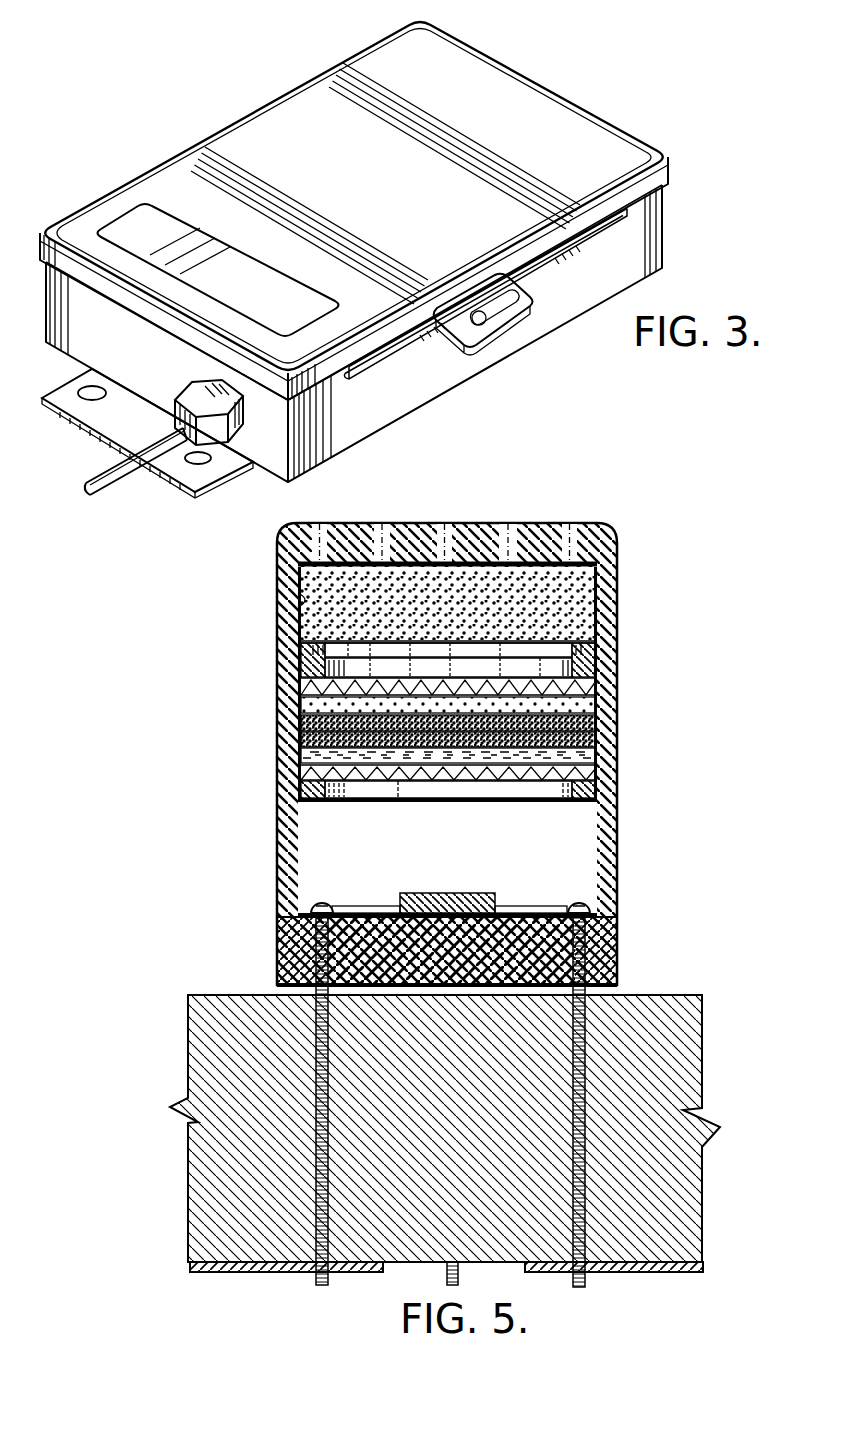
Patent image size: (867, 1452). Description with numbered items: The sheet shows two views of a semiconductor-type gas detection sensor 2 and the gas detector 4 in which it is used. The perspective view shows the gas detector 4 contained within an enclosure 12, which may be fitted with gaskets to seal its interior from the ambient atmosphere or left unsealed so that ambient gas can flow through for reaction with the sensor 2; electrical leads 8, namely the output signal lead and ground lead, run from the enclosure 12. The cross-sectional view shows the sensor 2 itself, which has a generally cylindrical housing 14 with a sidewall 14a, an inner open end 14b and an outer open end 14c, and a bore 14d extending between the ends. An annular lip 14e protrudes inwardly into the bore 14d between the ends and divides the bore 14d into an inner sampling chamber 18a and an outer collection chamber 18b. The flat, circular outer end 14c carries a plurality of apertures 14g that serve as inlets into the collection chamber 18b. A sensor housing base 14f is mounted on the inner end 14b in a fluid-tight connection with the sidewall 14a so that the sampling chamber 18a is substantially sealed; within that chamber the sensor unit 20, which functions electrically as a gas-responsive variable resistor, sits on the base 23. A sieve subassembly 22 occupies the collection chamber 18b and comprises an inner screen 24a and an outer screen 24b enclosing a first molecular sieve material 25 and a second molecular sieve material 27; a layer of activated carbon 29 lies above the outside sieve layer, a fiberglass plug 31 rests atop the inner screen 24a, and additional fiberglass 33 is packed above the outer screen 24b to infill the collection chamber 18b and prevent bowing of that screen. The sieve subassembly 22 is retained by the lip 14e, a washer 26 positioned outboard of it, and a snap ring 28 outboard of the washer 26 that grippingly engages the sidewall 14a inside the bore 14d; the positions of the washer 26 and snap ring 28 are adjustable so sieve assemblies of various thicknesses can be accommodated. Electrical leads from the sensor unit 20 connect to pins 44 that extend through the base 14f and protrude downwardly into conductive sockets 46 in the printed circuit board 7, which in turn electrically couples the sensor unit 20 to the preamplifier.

In FIG. 5, the gas detection sensor 2 is at (469, 872).
In FIG. 3, the gas detector 4 is at (354, 267).
In FIG. 5, the printed circuit board 7 is at (675, 1045).
In FIG. 3, the electrical leads 8 is at (122, 478).
In FIG. 3, the enclosure 12 is at (290, 90).
In FIG. 5, the housing 14 is at (623, 612).
In FIG. 5, the sidewall 14a is at (282, 647).
In FIG. 5, the inner open end 14b is at (290, 958).
In FIG. 5, the outer open end 14c is at (488, 522).
In FIG. 5, the bore 14d is at (287, 593).
In FIG. 5, the annular lip 14e is at (308, 802).
In FIG. 5, the sensor housing base 14f is at (474, 958).
In FIG. 5, the apertures 14g is at (573, 522).
In FIG. 5, the inner sampling chamber 18a is at (447, 851).
In FIG. 5, the outer collection chamber 18b is at (434, 614).
In FIG. 5, the sensor unit 20 is at (440, 893).
In FIG. 5, the sieve subassembly 22 is at (472, 632).
In FIG. 5, the base 23 is at (390, 906).
In FIG. 5, the inner screen 24a is at (585, 778).
In FIG. 5, the outer screen 24b is at (585, 688).
In FIG. 5, the first molecular sieve material 25 is at (585, 748).
In FIG. 5, the washer 26 is at (543, 663).
In FIG. 5, the second molecular sieve material 27 is at (585, 727).
In FIG. 5, the snap ring 28 is at (546, 648).
In FIG. 5, the layer of activated carbon 29 is at (308, 705).
In FIG. 5, the fiberglass plug 31 is at (305, 758).
In FIG. 5, the additional fiberglass 33 is at (567, 596).
In FIG. 5, the pins 44 is at (320, 903).
In FIG. 5, the conductive sockets 46 is at (333, 1143).